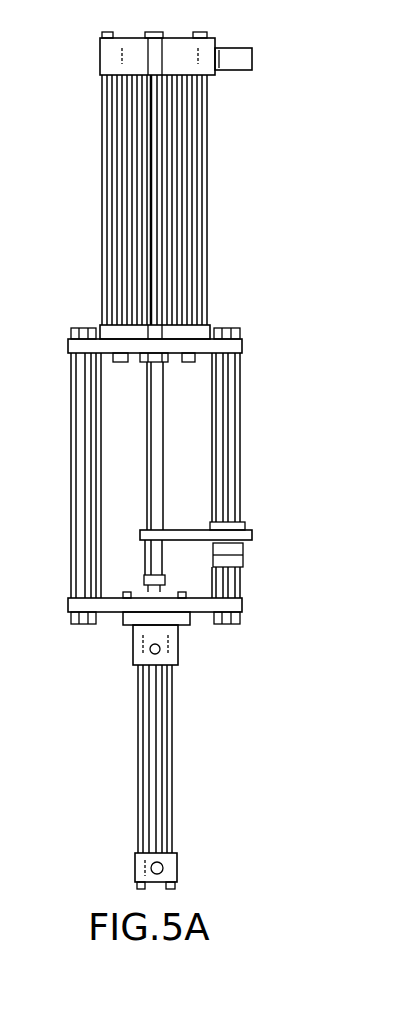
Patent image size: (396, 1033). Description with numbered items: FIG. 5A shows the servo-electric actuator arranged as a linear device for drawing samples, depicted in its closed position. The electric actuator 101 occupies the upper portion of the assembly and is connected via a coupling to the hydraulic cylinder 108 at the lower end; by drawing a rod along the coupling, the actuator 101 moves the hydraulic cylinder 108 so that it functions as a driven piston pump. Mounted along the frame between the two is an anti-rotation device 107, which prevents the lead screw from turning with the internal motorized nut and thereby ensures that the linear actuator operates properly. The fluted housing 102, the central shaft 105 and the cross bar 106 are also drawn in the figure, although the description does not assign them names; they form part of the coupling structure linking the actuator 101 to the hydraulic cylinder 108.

The electric actuator 101 is at (308, 155).
The motor cylinder 102 is at (103, 215).
The central drive shaft 105 is at (148, 405).
The cross bar 106 is at (140, 534).
The anti-rotation device 107 is at (244, 552).
The hydraulic cylinder 108 is at (175, 790).